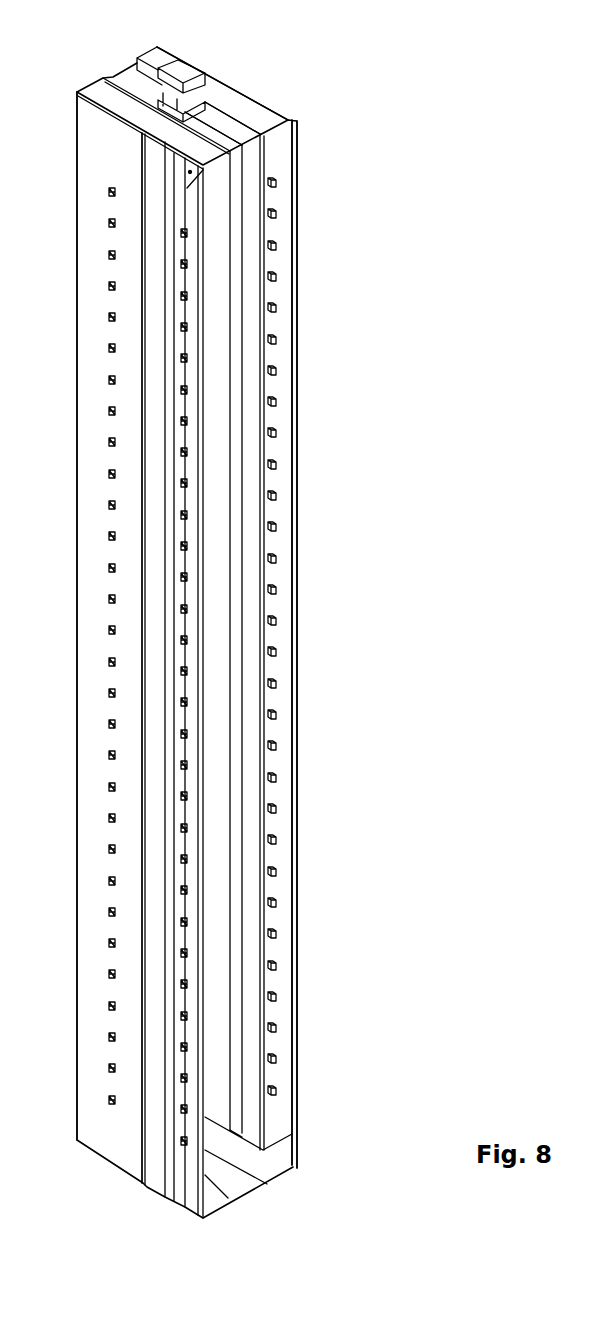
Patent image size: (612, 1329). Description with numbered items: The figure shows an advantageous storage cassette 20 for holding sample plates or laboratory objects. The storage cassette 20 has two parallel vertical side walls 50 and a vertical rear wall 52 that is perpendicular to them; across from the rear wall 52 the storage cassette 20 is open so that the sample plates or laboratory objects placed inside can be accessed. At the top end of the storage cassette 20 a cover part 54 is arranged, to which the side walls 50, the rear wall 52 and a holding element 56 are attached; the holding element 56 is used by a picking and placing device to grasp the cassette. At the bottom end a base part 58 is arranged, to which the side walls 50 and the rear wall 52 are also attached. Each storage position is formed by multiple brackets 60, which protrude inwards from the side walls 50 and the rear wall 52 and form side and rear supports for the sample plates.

The storage cassette 20 is at (402, 357).
The side walls 50 is at (83, 118).
The rear wall 52 is at (137, 60).
The cover part 54 is at (245, 110).
The holding element 56 is at (192, 70).
The base part 58 is at (272, 1172).
The brackets 60 is at (110, 190).